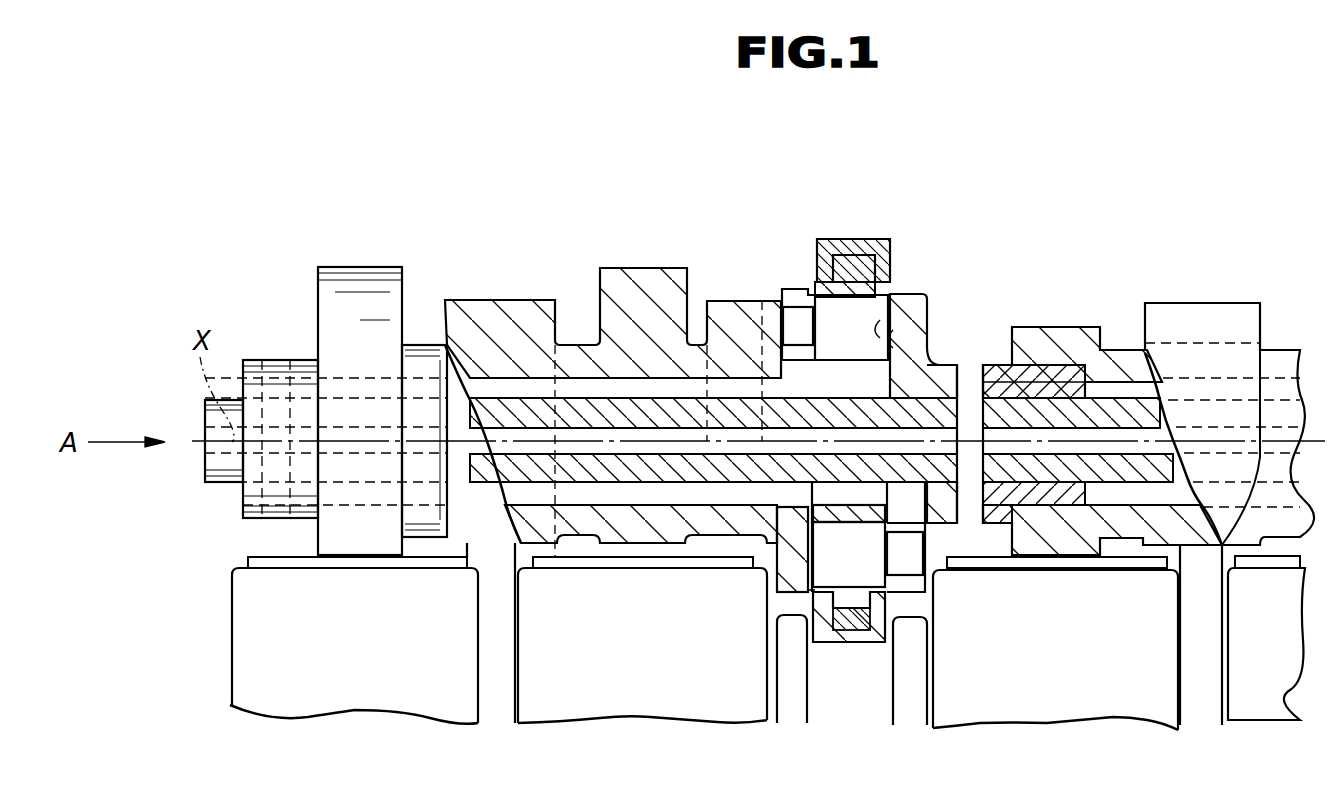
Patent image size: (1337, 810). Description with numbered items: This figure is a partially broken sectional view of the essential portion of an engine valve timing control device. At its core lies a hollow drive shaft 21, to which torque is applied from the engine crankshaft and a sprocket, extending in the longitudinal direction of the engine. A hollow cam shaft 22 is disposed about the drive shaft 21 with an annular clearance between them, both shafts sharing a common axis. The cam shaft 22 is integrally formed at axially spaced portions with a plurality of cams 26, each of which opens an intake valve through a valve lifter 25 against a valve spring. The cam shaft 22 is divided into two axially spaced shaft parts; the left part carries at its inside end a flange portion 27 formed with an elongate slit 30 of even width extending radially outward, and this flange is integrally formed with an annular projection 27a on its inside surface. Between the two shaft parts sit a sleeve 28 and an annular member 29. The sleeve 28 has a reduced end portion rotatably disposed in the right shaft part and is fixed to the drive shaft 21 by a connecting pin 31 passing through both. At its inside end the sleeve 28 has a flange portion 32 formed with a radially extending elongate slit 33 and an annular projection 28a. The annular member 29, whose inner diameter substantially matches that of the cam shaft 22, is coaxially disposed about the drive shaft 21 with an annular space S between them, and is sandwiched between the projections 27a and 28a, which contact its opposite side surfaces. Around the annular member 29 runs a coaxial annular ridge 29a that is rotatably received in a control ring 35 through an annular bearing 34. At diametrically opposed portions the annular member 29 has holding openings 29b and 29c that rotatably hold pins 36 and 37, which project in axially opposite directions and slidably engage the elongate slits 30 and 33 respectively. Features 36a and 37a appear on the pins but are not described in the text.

The drive shaft 21 is at (212, 484).
The cam shaft 22 is at (573, 343).
The valve lifter 25 is at (472, 682).
The cam 26 is at (361, 267).
The flange portion 27 is at (778, 573).
The annular projection 27a is at (822, 588).
The sleeve 28 is at (996, 365).
The annular projection 28a is at (878, 330).
The annular member 29 is at (880, 282).
The annular ridge 29a is at (856, 645).
The holding opening 29b is at (880, 322).
The holding opening 29c is at (820, 640).
The elongate slit 30 is at (776, 300).
The connecting pin 31 is at (1003, 530).
The flange portion 32 is at (910, 320).
The elongate slit 33 is at (938, 528).
The annular bearing 34 is at (840, 256).
The control ring 35 is at (857, 239).
The pin 36 is at (760, 300).
The recess 36a is at (793, 322).
The pin 37 is at (888, 612).
The lower recess 37a is at (935, 575).
The annular space S is at (777, 543).